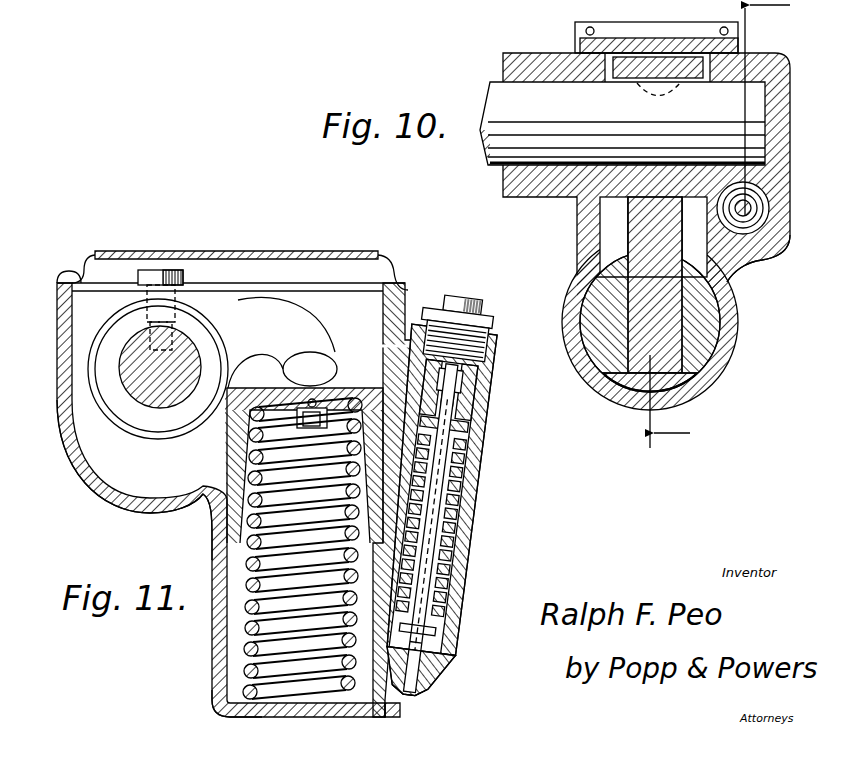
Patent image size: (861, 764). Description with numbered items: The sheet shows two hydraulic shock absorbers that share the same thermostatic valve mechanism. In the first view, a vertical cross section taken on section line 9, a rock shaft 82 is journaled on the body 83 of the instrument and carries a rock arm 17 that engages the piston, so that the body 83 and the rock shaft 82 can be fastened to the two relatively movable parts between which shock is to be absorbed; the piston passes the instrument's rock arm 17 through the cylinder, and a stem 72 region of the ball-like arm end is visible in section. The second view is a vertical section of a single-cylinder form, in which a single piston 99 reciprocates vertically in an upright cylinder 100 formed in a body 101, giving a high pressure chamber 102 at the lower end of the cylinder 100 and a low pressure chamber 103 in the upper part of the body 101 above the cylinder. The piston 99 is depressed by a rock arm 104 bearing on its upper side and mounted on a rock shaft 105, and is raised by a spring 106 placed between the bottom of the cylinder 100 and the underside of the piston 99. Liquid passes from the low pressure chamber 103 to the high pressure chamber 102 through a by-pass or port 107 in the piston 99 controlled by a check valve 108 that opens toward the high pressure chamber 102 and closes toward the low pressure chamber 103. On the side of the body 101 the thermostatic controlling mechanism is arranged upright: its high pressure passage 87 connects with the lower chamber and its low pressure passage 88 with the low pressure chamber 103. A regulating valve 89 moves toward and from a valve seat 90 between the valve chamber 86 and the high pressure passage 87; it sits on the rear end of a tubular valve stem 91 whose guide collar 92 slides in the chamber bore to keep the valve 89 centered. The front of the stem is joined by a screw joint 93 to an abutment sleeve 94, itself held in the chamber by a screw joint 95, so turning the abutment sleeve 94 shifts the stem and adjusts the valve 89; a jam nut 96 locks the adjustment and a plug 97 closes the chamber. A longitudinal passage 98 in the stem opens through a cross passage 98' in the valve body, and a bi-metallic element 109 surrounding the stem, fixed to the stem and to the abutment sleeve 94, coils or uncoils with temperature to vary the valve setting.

In FIG. 10, the section line 9 is at (716, 232).
In FIG. 10, the rock arm 17 is at (582, 322).
In FIG. 10, the ball stem / pin 72 is at (728, 365).
In FIG. 10, the rock shaft 82 is at (567, 110).
In FIG. 10, the body 83 is at (782, 117).
In FIG. 10, the valve chamber 86 is at (685, 250).
In FIG. 11, the valve chamber 86 is at (473, 460).
In FIG. 10, the high pressure passage 87 is at (685, 365).
In FIG. 11, the high pressure passage 87 is at (388, 693).
In FIG. 11, the low pressure passage 88 is at (400, 338).
In FIG. 11, the regulating valve 89 is at (423, 683).
In FIG. 11, the valve seat 90 is at (430, 663).
In FIG. 10, the tubular valve stem 91 is at (745, 255).
In FIG. 11, the tubular valve stem 91 is at (440, 567).
In FIG. 11, the guide collar 92 is at (432, 636).
In FIG. 11, the screw joint 93 is at (480, 423).
In FIG. 11, the abutment sleeve 94 is at (492, 388).
In FIG. 11, the screw joint 95 is at (477, 397).
In FIG. 11, the jam nut 96 is at (493, 361).
In FIG. 11, the plug 97 is at (463, 298).
In FIG. 10, the longitudinal passage 98 is at (768, 258).
In FIG. 11, the longitudinal passage 98 is at (453, 528).
In FIG. 11, the cross passage 98' is at (467, 653).
In FIG. 11, the piston 99 is at (224, 466).
In FIG. 11, the upright cylinder 100 is at (212, 647).
In FIG. 11, the body 101 is at (96, 494).
In FIG. 11, the high pressure chamber 102 is at (216, 688).
In FIG. 11, the low pressure chamber 103 is at (295, 343).
In FIG. 11, the rock arm 104 is at (245, 308).
In FIG. 11, the rock shaft 105 is at (174, 347).
In FIG. 11, the spring 106 is at (253, 613).
In FIG. 11, the by-pass or port 107 is at (310, 398).
In FIG. 11, the check valve 108 is at (328, 405).
In FIG. 10, the bi-metallic element 109 is at (763, 209).
In FIG. 11, the bi-metallic element 109 is at (472, 495).